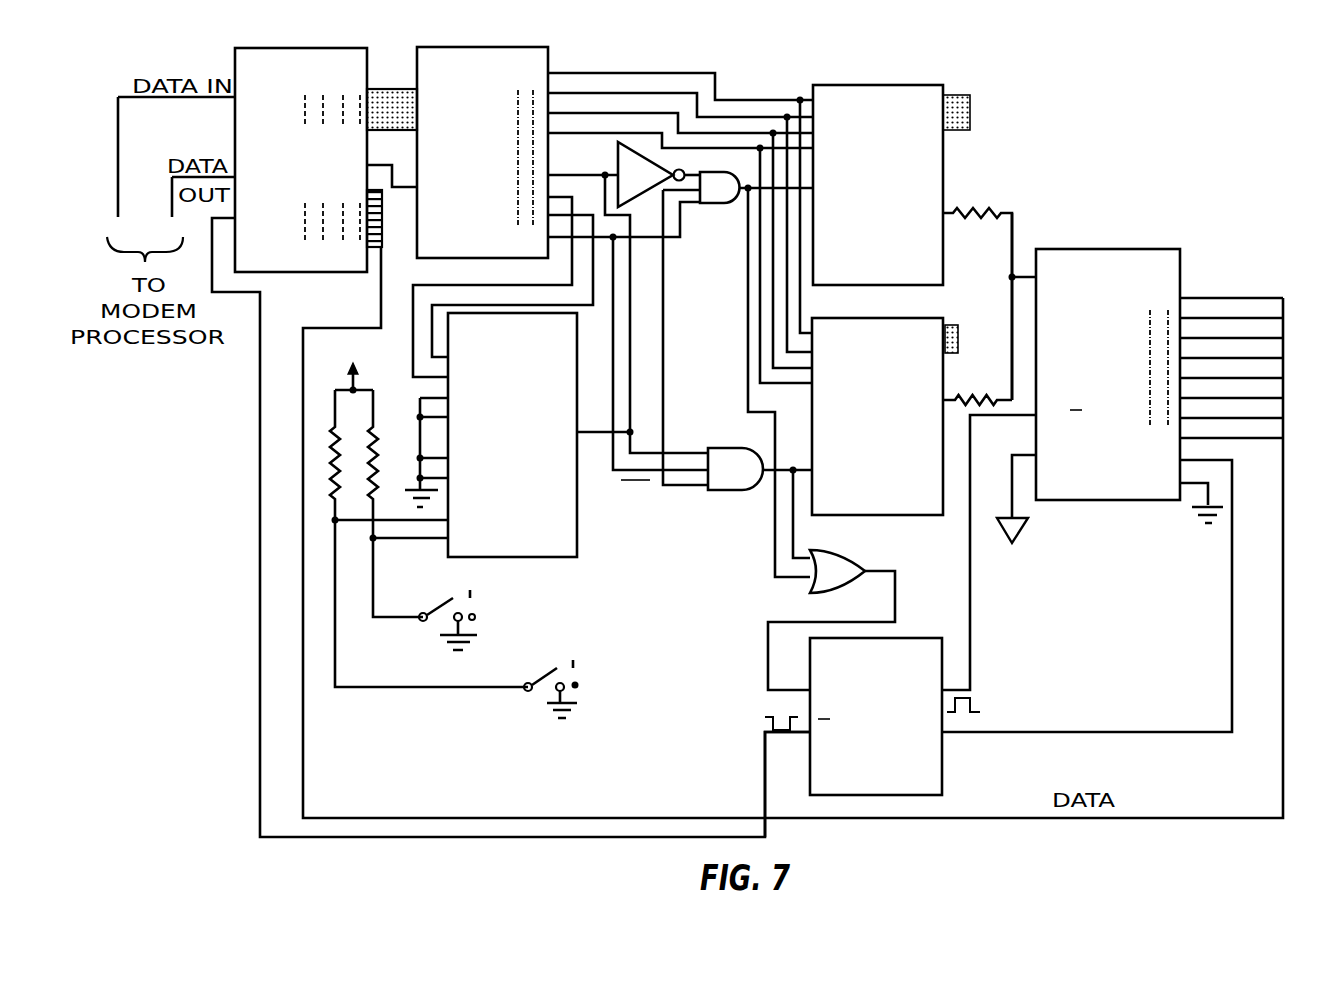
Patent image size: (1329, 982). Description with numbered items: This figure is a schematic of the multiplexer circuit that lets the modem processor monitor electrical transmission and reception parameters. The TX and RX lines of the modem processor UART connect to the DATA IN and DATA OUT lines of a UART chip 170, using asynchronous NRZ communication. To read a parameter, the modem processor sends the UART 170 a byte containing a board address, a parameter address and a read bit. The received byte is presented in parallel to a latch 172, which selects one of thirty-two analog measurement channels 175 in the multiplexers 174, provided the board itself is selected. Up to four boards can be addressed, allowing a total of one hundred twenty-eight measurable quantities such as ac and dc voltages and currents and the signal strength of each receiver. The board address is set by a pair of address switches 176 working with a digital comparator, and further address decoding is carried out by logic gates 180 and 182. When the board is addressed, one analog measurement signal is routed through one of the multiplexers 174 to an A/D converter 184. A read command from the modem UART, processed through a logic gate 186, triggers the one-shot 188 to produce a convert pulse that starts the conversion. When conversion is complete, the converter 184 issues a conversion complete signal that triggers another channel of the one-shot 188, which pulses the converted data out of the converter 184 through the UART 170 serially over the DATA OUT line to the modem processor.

The UART chip 170 is at (342, 268).
The latch 172 is at (550, 63).
The multiplexers 174 is at (945, 253).
The analog measurement channels 175 is at (963, 97).
The address switches 176 is at (525, 640).
The logic gates 180 is at (720, 203).
The logic gate 182 is at (618, 152).
The A/D converter 184 is at (1138, 248).
The logic gate 186 is at (815, 592).
The one-shot 188 is at (942, 773).